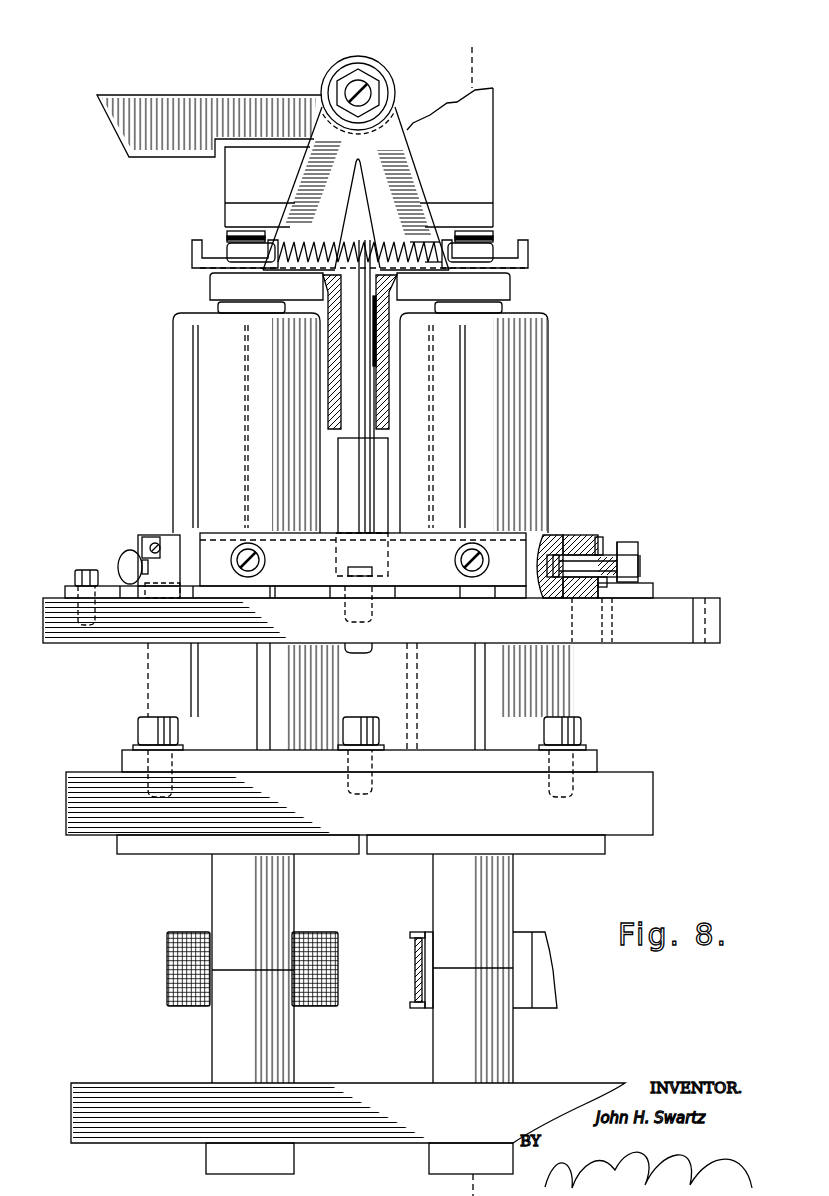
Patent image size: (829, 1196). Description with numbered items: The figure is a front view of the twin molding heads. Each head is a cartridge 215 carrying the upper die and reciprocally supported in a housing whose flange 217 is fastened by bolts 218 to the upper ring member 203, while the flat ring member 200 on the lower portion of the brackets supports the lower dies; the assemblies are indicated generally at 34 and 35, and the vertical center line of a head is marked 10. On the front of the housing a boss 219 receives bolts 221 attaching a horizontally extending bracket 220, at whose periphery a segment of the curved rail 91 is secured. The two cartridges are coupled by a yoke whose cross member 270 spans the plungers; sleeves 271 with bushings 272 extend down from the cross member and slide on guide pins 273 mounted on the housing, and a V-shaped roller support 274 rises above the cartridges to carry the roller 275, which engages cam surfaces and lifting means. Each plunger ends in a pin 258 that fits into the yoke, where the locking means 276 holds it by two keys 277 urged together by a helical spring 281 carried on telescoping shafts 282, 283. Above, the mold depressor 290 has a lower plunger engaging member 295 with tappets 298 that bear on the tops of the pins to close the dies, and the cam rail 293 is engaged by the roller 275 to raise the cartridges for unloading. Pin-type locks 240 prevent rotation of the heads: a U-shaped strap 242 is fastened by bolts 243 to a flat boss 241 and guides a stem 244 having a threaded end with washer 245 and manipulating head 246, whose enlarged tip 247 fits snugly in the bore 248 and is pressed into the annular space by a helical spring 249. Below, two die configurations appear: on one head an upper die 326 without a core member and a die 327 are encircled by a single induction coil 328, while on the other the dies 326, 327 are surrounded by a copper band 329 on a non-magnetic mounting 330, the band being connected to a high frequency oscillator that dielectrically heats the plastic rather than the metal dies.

The center line 10 is at (476, 55).
The cam rail 293 is at (145, 107).
The roller 275 is at (388, 74).
The mold depressor 290 is at (498, 150).
The V-shaped roller support 274 is at (410, 184).
The shaft 282 is at (295, 210).
The lower plunger engaging member 295 is at (487, 217).
The tappets 298 is at (243, 232).
The pin 258 is at (230, 247).
The keys 277 is at (192, 255).
The cross member 270 is at (232, 285).
The helical spring 281 is at (330, 267).
The shaft 283 is at (422, 264).
The locking means 276 is at (442, 277).
The sleeves 271 is at (378, 329).
The bushings 272 is at (389, 338).
The guide pins 273 is at (372, 471).
The cylinder assembly 35 is at (579, 395).
The cartridge 215 is at (173, 418).
The mounting assembly 34 is at (162, 514).
The bracket 220 is at (214, 538).
The boss 219 is at (250, 548).
The flat boss 241 is at (553, 535).
The enlarged tip 247 is at (555, 557).
The U-shaped strap 242 is at (585, 535).
The stem 244 is at (600, 540).
The bore 248 is at (603, 550).
The washer 245 is at (622, 547).
The pin-type locks 240 is at (660, 542).
The manipulating head 246 is at (638, 549).
The curved rail 91 is at (55, 607).
The bolts 221 is at (240, 579).
The bolts 243 is at (580, 598).
The helical spring 249 is at (608, 585).
The bolts 218 is at (580, 724).
The flange 217 is at (590, 762).
The upper ring member 203 is at (645, 801).
The upper die 326 is at (212, 898).
The non-magnetic mounting 330 is at (417, 932).
The induction coil 328 is at (167, 980).
The copper band 329 is at (415, 975).
The die 327 is at (212, 1030).
The flat ring member 200 is at (113, 1085).